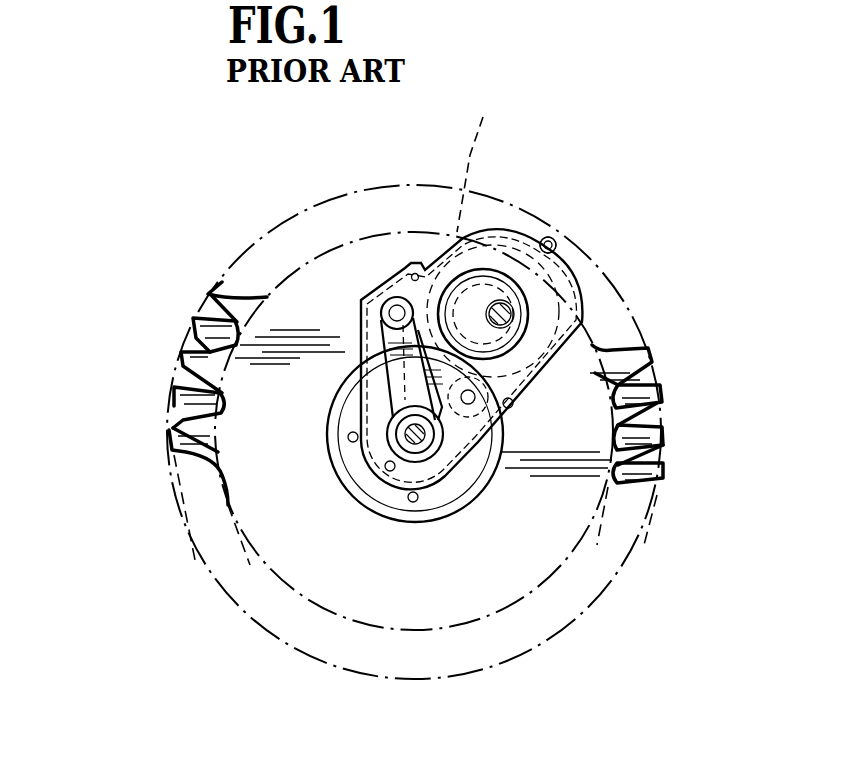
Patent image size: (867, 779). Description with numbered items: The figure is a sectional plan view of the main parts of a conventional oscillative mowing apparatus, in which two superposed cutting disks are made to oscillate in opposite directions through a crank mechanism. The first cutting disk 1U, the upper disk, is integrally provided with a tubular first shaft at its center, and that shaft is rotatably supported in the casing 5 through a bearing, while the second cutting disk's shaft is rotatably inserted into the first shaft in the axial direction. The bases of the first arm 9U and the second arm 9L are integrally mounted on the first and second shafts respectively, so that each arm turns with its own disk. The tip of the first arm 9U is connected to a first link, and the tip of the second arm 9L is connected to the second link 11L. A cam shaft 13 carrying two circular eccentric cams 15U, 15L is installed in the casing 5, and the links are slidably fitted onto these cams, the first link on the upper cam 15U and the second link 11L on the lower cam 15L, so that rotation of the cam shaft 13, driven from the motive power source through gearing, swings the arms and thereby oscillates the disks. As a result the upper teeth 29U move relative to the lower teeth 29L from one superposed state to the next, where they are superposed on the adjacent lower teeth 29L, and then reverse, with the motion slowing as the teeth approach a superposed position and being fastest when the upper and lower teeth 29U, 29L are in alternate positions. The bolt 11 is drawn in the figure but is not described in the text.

The first cutting disk 1U is at (250, 434).
The casing 5 is at (375, 285).
The first arm 9U is at (400, 384).
The second arm 9L is at (430, 380).
The pivot bolt 11 is at (416, 274).
The second link 11L is at (490, 165).
The cam shaft 13 is at (508, 317).
The circular eccentric cam 15U is at (473, 283).
The circular eccentric cam 15L is at (557, 247).
The upper teeth 29U is at (183, 366).
The lower teeth 29L is at (193, 320).